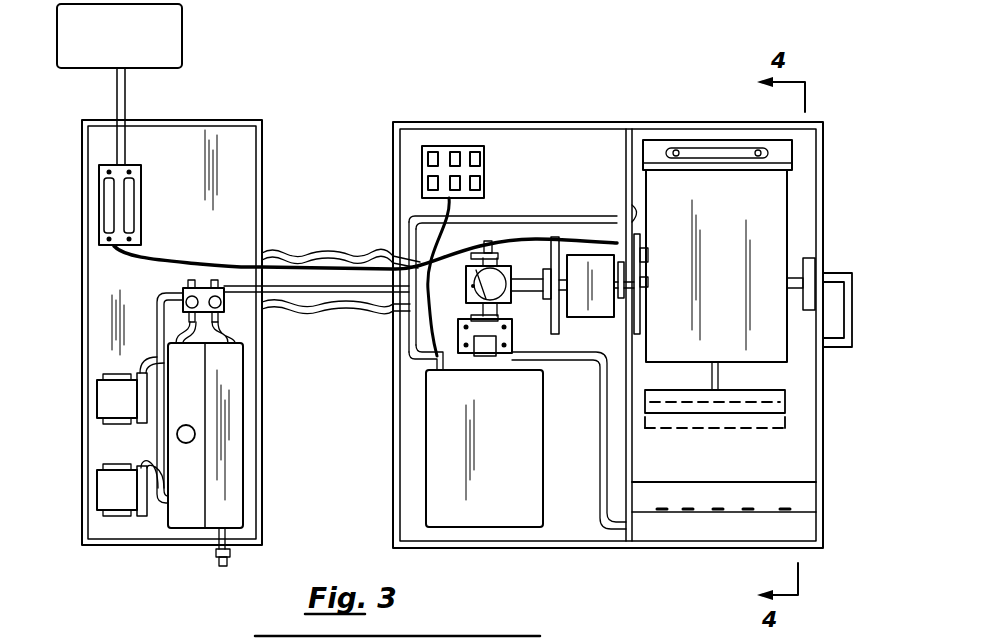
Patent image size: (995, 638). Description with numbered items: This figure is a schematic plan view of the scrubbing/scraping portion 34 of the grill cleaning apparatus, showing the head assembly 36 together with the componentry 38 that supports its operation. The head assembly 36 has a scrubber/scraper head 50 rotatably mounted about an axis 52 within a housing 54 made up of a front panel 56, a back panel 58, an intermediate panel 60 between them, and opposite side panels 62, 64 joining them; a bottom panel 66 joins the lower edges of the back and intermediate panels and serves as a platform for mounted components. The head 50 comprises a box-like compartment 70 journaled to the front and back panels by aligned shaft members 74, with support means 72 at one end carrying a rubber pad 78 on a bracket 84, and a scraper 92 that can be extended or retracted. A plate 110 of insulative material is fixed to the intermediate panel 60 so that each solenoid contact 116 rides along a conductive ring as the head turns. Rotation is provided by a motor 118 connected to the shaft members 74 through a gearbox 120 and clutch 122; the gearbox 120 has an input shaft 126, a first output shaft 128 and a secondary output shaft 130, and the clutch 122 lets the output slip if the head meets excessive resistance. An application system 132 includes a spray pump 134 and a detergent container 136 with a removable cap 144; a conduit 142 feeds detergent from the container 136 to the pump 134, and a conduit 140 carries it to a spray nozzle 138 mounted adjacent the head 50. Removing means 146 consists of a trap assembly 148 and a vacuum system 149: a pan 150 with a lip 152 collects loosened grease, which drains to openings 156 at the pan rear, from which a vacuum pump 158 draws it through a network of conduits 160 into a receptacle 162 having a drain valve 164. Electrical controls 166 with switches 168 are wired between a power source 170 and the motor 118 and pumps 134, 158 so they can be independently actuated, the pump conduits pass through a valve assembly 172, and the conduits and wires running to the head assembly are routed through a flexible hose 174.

The scrubbing/scraping portion 34 is at (508, 116).
The head assembly 36 is at (666, 126).
The componentry 38 is at (100, 304).
The scrubber/scraper head 50 is at (787, 208).
The axis 52 is at (882, 280).
The housing 54 is at (548, 548).
The front panel 56 is at (822, 470).
The back panel 58 is at (394, 490).
The intermediate panel 60 is at (626, 138).
The side panel 62 is at (450, 548).
The side panel 64 is at (440, 123).
The bottom panel 66 is at (412, 438).
The compartment 70 is at (788, 362).
The support means 72 is at (773, 228).
The shaft members 74 is at (648, 286).
The rubber pad 78 is at (705, 140).
The bracket 84 is at (795, 167).
The scraper 92 is at (786, 420).
The plate 110 is at (638, 324).
The solenoid contact 116 is at (648, 253).
The motor 118 is at (543, 465).
The gearbox 120 is at (474, 287).
The clutch 122 is at (591, 280).
The input shaft 126 is at (491, 338).
The first output shaft 128 is at (549, 280).
The secondary output shaft 130 is at (488, 241).
The application system 132 is at (70, 385).
The spray pump 134 is at (103, 396).
The container 136 is at (173, 511).
The spray nozzle 138 is at (633, 217).
The conduit 140 is at (413, 222).
The conduit 142 is at (167, 312).
The removable cap 144 is at (196, 434).
The removing means 146 is at (66, 502).
The trap assembly 148 is at (805, 519).
The vacuum system 149 is at (66, 520).
The pan 150 is at (684, 528).
The lip 152 is at (796, 450).
The openings 156 is at (688, 507).
The vacuum pump 158 is at (105, 488).
The conduits 160 is at (605, 402).
The receptacle 162 is at (230, 487).
The drain valve 164 is at (231, 562).
The electrical controls 166 is at (224, 144).
The switches 168 is at (426, 182).
The power source 170 is at (185, 26).
The valve assembly 172 is at (202, 292).
The flexible hose 174 is at (297, 252).